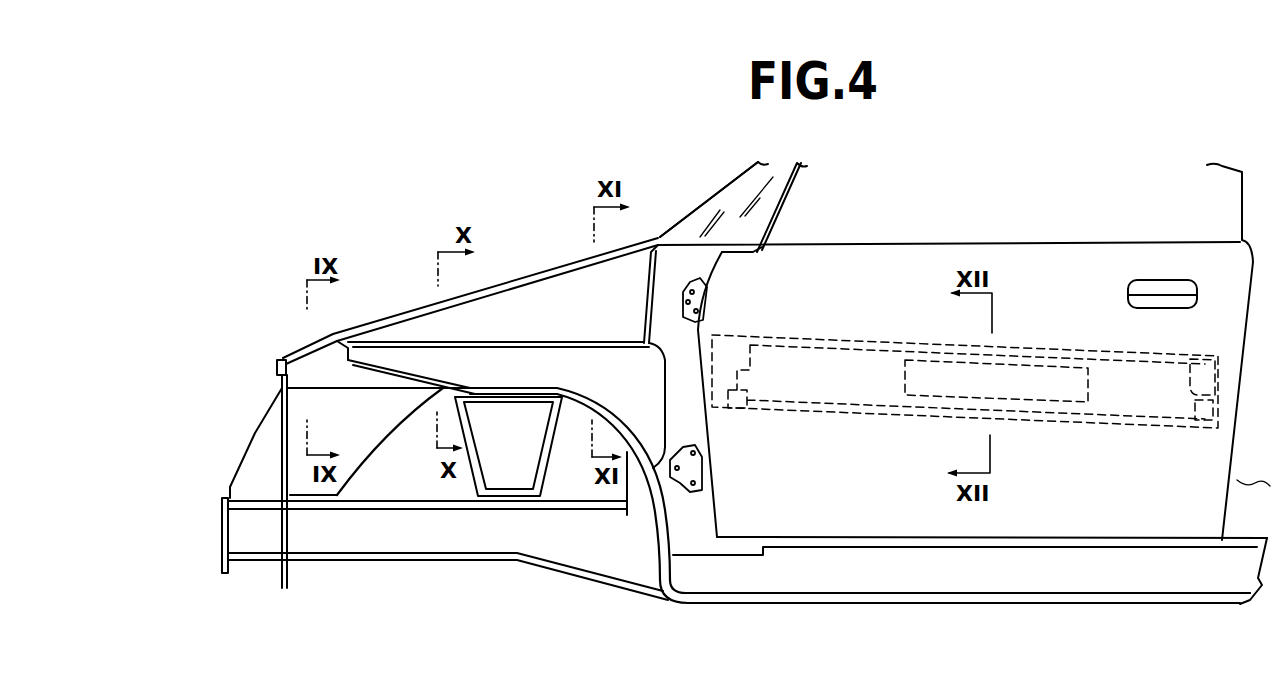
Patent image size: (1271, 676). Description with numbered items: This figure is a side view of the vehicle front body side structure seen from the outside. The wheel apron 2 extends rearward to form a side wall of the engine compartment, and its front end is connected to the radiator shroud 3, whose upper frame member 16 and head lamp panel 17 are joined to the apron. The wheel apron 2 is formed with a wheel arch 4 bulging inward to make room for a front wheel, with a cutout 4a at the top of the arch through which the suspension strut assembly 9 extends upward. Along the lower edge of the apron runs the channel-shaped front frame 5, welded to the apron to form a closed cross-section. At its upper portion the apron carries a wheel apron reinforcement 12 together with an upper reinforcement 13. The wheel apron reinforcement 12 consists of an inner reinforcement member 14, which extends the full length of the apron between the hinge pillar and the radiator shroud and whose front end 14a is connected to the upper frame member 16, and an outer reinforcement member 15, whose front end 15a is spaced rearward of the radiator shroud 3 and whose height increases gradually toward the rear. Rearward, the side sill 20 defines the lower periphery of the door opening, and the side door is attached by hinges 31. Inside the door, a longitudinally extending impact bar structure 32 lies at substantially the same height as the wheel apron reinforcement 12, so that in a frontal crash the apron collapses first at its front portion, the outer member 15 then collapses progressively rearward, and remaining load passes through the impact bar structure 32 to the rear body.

The wheel apron 2 is at (430, 323).
The radiator shroud 3 is at (235, 455).
The wheel arch 4 is at (390, 497).
The cutout 4a is at (510, 477).
The front frame 5 is at (322, 525).
The suspension strut assembly 9 is at (687, 203).
The wheel apron reinforcement 12 is at (608, 392).
The upper reinforcement 13 is at (627, 267).
The inner reinforcement member 14 is at (355, 381).
The front end 14a is at (303, 357).
The outer reinforcement member 15 is at (451, 471).
The front end 15a is at (365, 353).
The upper frame member 16 is at (283, 358).
The head lamp panel 17 is at (280, 478).
The side sill 20 is at (730, 583).
The hinges 31 is at (707, 290).
The impact bar structure 32 is at (1022, 367).